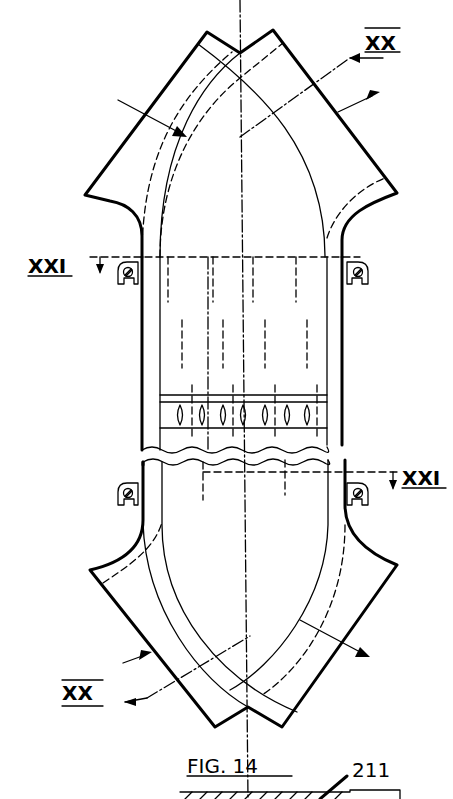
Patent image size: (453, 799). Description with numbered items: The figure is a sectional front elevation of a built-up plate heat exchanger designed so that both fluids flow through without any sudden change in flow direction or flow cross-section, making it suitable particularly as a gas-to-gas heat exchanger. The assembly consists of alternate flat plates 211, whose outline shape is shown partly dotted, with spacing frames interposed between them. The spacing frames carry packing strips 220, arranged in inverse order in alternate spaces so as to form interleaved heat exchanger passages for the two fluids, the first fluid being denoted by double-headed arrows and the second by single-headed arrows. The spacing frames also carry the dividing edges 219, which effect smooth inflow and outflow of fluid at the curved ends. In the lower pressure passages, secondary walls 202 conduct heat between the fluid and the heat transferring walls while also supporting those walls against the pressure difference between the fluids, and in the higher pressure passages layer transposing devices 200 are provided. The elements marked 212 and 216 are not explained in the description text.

The layer transposing device 200 is at (315, 413).
The secondary walls 202 is at (267, 345).
The flat plates 211 is at (182, 199).
The cylindrical wall section 212 is at (99, 353).
The clip / seal 216 is at (117, 500).
The dividing edges 219 is at (133, 160).
The packing strips 220 is at (331, 208).